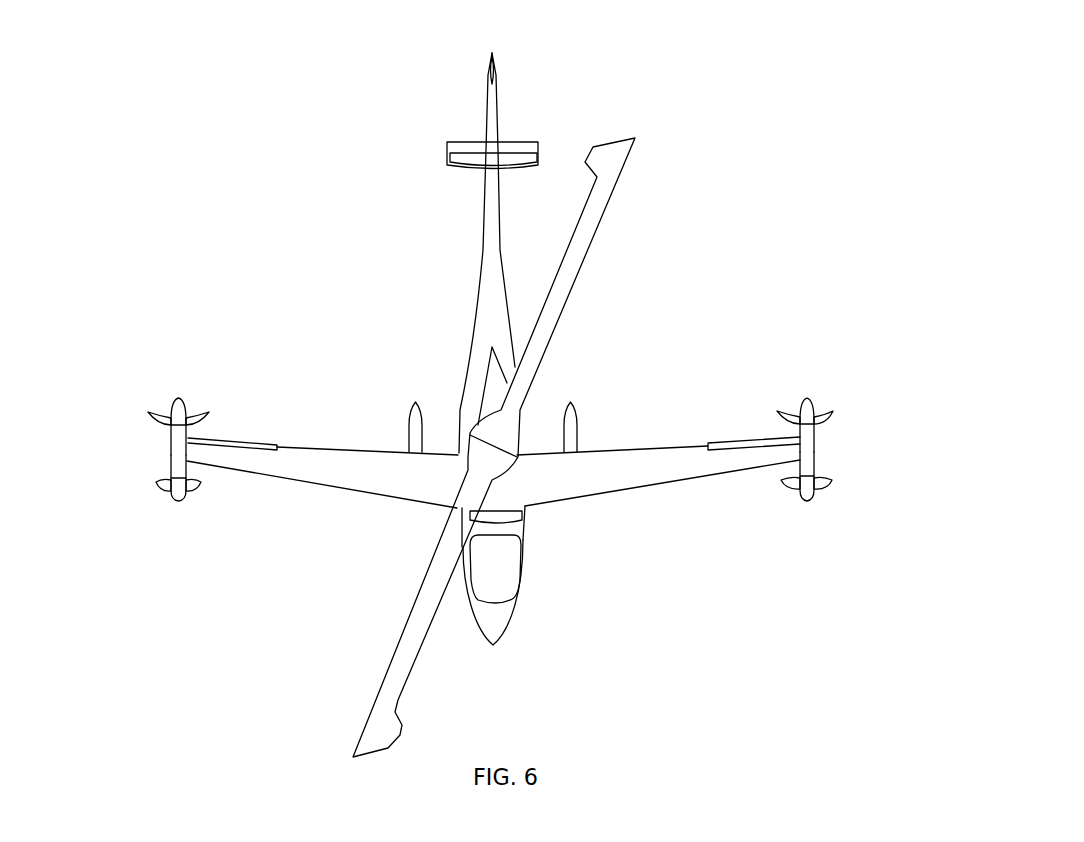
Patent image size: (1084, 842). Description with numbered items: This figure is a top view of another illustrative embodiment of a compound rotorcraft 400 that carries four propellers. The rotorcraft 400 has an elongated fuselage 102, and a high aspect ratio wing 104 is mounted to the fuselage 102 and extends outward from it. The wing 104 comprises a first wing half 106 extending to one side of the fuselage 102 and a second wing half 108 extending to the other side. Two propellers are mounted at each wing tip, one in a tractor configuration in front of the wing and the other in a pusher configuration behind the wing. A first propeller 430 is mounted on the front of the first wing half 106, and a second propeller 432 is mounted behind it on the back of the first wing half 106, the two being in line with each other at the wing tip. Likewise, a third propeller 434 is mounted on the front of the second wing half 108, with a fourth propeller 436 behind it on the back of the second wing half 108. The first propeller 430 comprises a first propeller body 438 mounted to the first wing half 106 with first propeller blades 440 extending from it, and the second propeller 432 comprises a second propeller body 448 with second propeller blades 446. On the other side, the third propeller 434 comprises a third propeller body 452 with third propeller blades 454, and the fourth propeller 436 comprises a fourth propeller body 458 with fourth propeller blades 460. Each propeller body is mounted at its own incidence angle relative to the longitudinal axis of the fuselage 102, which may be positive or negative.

The compound rotorcraft 400 is at (348, 150).
The fuselage 102 is at (480, 293).
The wing 104 is at (347, 443).
The first wing half 106 is at (330, 487).
The second wing half 108 is at (645, 487).
The first propeller 430 is at (170, 463).
The second propeller 432 is at (180, 398).
The third propeller 434 is at (805, 500).
The fourth propeller 436 is at (808, 393).
The first propeller body 438 is at (187, 472).
The first propeller blades 440 is at (180, 500).
The second propeller blades 446 is at (198, 407).
The second propeller body 448 is at (187, 437).
The third propeller body 452 is at (818, 466).
The third propeller blades 454 is at (832, 487).
The fourth propeller body 458 is at (818, 432).
The fourth propeller blades 460 is at (825, 412).